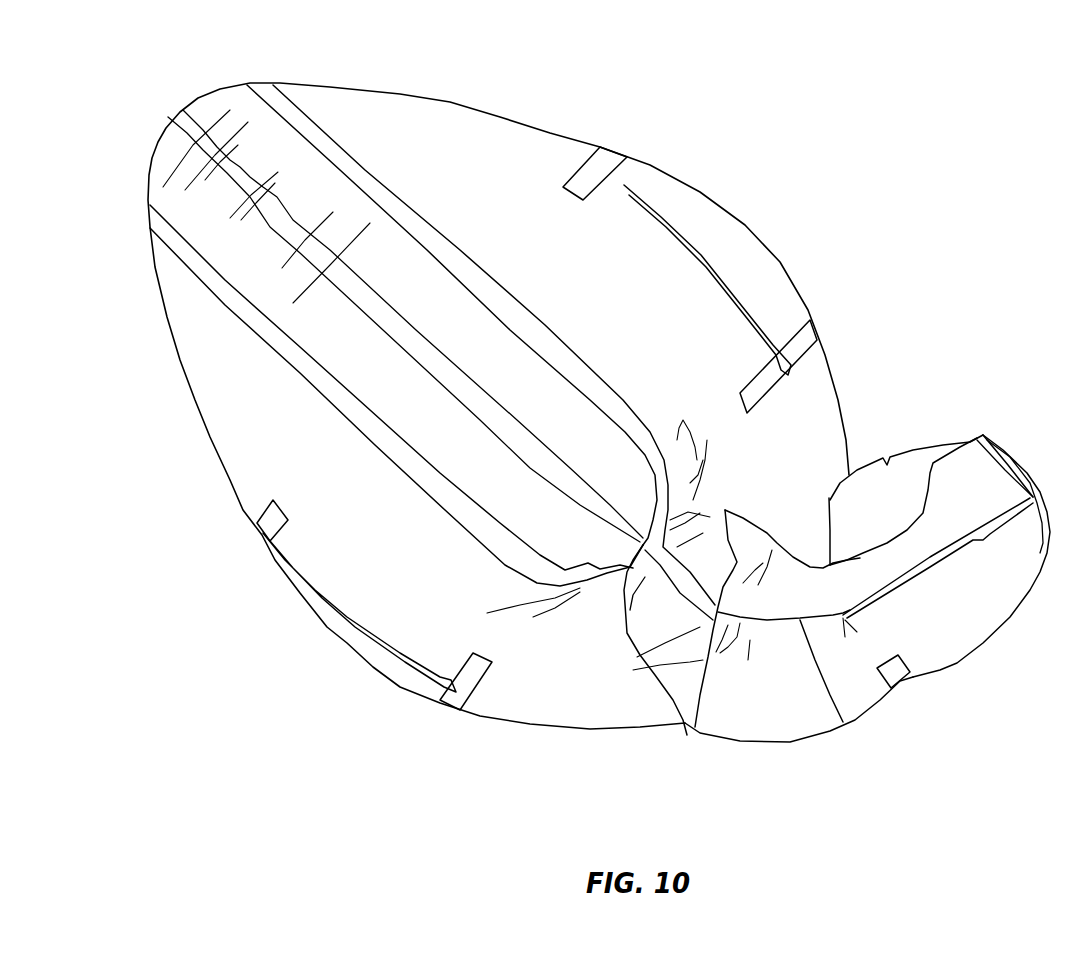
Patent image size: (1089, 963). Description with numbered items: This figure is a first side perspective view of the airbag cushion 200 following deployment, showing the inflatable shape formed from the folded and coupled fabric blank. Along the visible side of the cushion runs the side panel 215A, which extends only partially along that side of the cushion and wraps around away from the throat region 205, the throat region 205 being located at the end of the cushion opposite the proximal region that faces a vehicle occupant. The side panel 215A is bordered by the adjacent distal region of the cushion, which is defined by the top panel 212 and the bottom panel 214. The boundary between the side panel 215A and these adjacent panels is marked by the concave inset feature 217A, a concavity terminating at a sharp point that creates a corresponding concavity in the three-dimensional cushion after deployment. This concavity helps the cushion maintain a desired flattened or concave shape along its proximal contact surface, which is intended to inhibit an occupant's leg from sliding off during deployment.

The airbag cushion 200 is at (786, 267).
The bottom panel 214 is at (498, 400).
The side panel 215A is at (432, 332).
The top panel 212 is at (320, 594).
The throat region 205 is at (872, 581).
The concave inset feature 217A is at (655, 660).